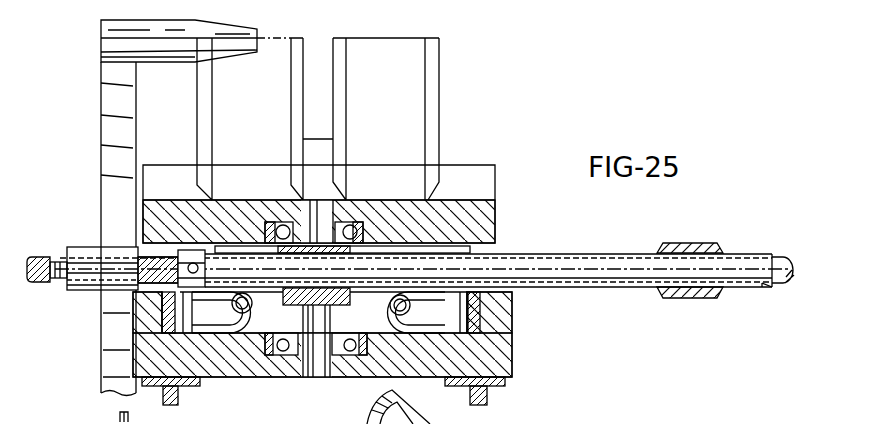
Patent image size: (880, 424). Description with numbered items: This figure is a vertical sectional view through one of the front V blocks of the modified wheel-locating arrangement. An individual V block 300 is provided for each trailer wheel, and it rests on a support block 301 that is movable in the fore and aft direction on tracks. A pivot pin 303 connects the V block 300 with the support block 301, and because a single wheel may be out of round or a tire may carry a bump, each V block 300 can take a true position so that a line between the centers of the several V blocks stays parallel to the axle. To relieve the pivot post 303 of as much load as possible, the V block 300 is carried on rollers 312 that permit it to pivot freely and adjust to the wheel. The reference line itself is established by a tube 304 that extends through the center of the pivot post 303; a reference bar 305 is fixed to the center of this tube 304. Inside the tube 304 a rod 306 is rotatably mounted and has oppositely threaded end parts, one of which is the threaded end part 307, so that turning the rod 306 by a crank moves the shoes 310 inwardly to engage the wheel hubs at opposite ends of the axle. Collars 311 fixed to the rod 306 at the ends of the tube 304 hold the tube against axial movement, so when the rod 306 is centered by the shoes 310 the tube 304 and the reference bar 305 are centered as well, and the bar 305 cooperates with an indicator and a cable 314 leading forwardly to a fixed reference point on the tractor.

The V block 300 is at (153, 192).
The support block 301 is at (507, 362).
The pivot pin 303 is at (307, 368).
The tube 304 is at (567, 260).
The reference bar 305 is at (680, 243).
The rod 306 is at (783, 260).
The threaded end part 307 is at (42, 285).
The shoe 310 is at (110, 225).
The collar 311 is at (178, 258).
The roller 312 is at (447, 308).
The cable 314 is at (489, 407).